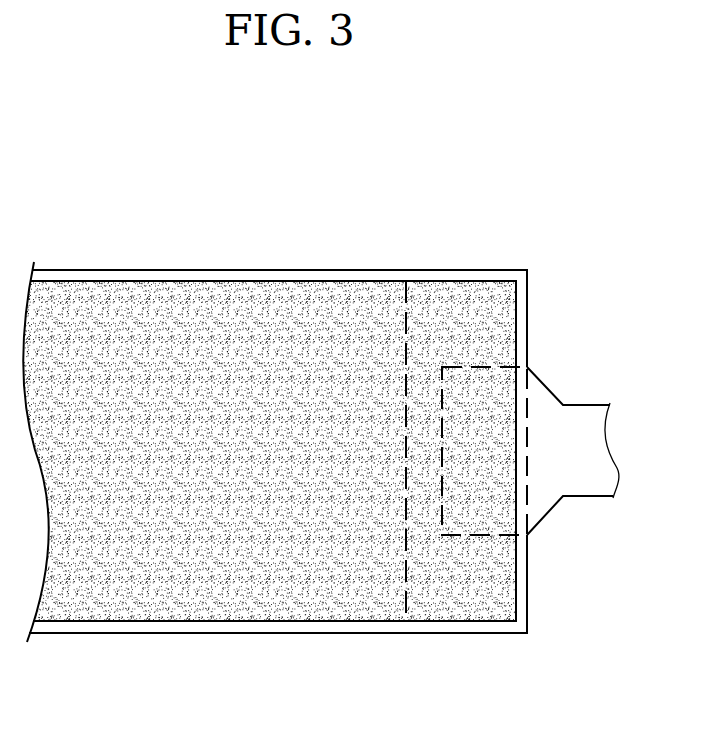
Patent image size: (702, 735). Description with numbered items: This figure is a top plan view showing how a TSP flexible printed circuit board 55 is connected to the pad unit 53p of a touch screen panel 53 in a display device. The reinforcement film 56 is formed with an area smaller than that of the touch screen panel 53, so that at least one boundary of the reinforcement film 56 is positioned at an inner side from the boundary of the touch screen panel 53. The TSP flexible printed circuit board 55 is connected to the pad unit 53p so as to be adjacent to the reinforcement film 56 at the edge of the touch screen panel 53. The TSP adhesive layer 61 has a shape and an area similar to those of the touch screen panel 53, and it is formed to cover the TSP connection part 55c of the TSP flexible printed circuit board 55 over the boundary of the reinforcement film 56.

The touch screen panel 53 is at (152, 627).
The pad unit 53p is at (445, 633).
The TSP flexible printed circuit board 55 is at (583, 483).
The TSP connection part 55c is at (476, 402).
The reinforcement film 56 is at (235, 301).
The TSP adhesive layer 61 is at (333, 603).